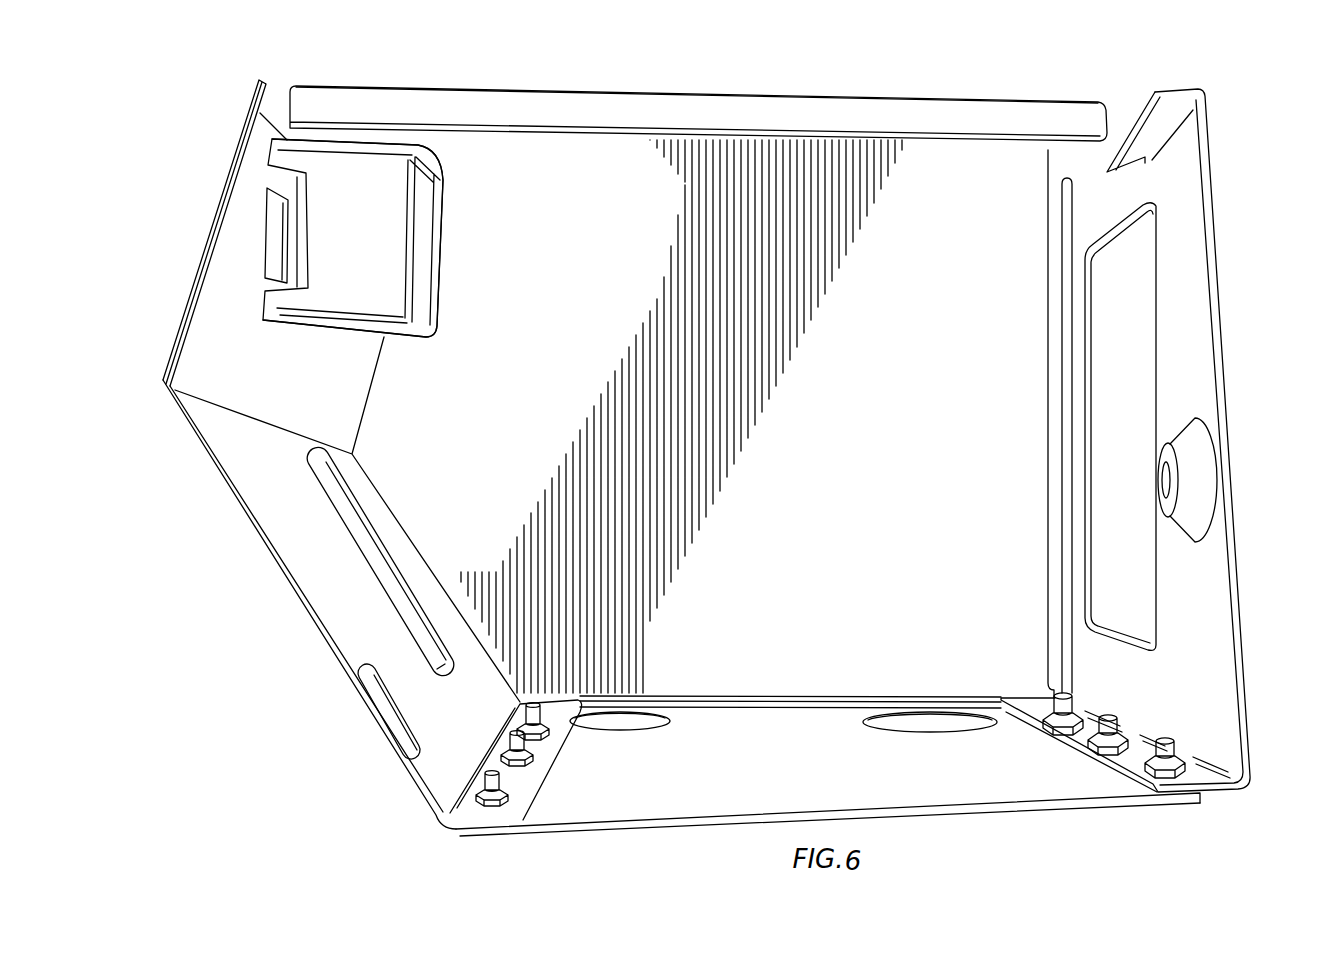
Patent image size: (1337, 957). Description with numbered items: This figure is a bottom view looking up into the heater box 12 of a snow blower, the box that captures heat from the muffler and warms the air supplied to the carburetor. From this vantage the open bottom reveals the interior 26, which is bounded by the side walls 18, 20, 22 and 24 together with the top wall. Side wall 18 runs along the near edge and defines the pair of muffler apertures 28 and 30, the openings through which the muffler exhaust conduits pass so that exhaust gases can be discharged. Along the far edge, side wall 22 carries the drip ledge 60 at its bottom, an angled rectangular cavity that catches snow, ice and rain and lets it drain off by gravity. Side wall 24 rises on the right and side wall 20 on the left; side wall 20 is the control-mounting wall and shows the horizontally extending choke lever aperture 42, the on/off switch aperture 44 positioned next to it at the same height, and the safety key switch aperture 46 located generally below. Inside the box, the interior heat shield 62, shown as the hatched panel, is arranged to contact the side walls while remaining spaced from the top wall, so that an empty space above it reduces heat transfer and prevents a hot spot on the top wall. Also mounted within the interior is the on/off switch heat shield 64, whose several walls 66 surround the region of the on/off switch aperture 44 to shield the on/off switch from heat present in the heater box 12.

The heater box 12 is at (947, 764).
The side wall 18 is at (655, 791).
The side wall 20 is at (320, 581).
The side wall 22 is at (857, 96).
The side wall 24 is at (1193, 360).
The interior 26 is at (812, 547).
The muffler aperture 28 is at (928, 710).
The muffler aperture 30 is at (628, 695).
The choke lever aperture 42 is at (397, 571).
The on/off switch aperture 44 is at (273, 237).
The safety key switch aperture 46 is at (393, 722).
The drip ledge 60 is at (487, 103).
The interior heat shield 62 is at (812, 446).
The on/off switch heat shield 64 is at (342, 226).
The walls 66 is at (430, 259).